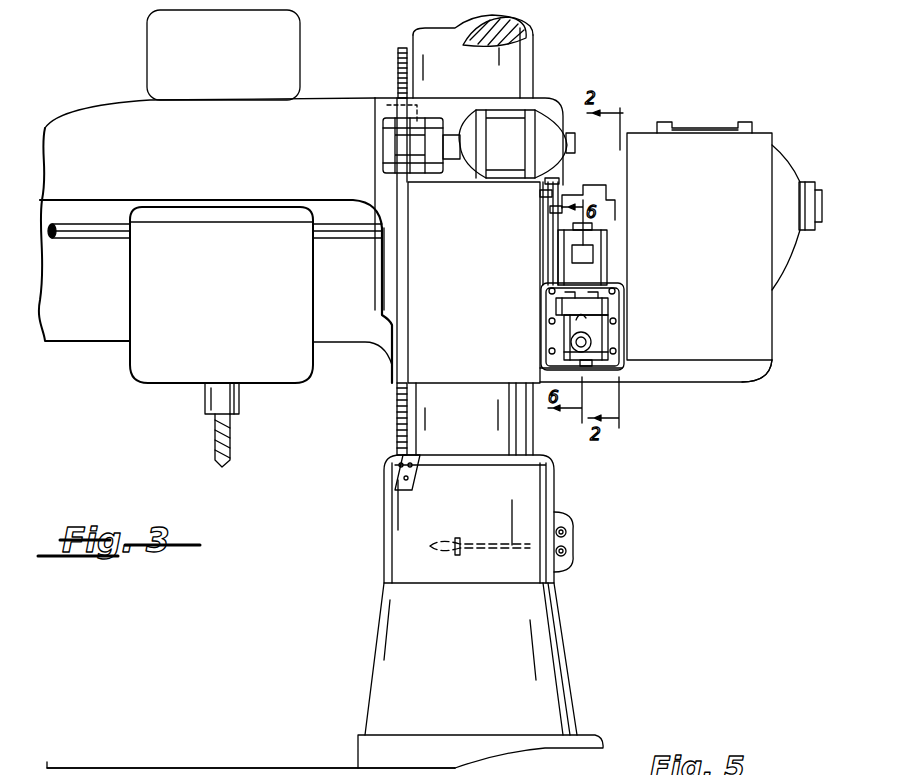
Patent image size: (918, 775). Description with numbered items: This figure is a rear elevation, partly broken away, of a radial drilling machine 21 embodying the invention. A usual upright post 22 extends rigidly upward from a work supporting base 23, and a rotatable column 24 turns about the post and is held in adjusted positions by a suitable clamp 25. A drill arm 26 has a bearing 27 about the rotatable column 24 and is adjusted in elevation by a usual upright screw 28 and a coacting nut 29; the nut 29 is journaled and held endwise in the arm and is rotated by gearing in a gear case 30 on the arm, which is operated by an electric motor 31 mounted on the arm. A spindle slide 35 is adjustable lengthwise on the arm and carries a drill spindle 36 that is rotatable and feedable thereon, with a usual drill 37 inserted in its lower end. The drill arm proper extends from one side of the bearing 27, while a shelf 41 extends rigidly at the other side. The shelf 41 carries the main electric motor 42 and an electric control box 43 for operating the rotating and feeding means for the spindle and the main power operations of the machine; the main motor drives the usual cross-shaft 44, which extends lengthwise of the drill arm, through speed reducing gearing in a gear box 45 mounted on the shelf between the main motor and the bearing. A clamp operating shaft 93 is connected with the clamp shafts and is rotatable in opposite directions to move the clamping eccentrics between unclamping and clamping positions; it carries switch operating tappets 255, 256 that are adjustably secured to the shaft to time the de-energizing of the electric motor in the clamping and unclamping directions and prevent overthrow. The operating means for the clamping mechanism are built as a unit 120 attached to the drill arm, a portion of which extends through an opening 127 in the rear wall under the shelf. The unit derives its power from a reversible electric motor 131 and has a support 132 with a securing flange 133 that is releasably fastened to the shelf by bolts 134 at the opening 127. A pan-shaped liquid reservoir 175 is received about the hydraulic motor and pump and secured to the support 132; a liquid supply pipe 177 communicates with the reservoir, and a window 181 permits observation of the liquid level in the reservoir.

The radial drilling machine 21 is at (549, 83).
The upright post 22 is at (520, 30).
The work supporting base 23 is at (292, 774).
The rotatable column 24 is at (522, 436).
The clamp 25 is at (578, 540).
The drill arm 26 is at (93, 352).
The bearing 27 is at (476, 110).
The upright screw 28 is at (398, 68).
The nut 29 is at (396, 108).
The gear case 30 is at (432, 140).
The electric motor 31 is at (506, 181).
The spindle slide 35 is at (300, 52).
The drill spindle 36 is at (229, 403).
The drill 37 is at (230, 434).
The shelf 41 is at (733, 368).
The main electric motor 42 is at (709, 126).
The electric control box 43 is at (770, 333).
The cross-shaft 44 is at (104, 233).
The gear box 45 is at (595, 185).
The clamp operating shaft 93 is at (558, 184).
The operating unit 120 is at (548, 351).
The opening 127 is at (600, 364).
The reversible electric motor 131 is at (604, 246).
The support 132 is at (610, 305).
The securing flange 133 is at (612, 332).
The bolts 134 is at (620, 351).
The liquid reservoir 175 is at (568, 334).
The liquid supply pipe 177 is at (586, 332).
The window 181 is at (571, 344).
The switch operating tappet 255 is at (543, 197).
The switch operating tappet 256 is at (551, 212).